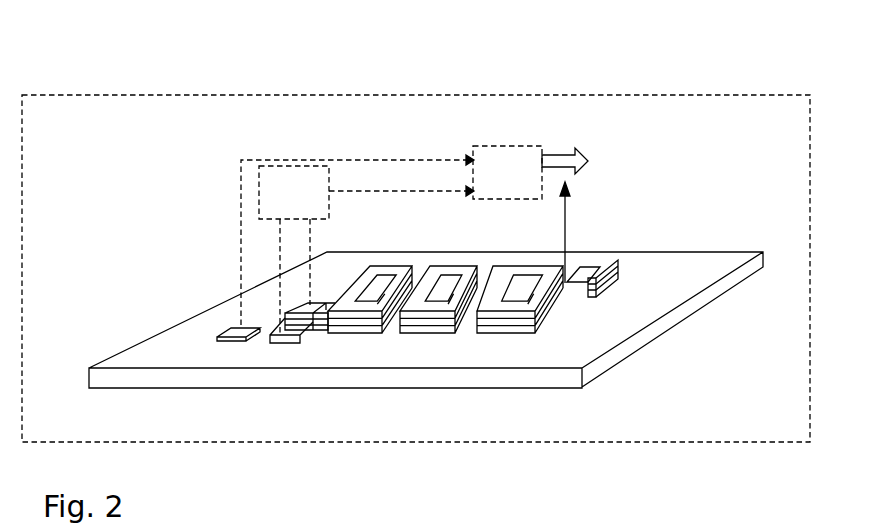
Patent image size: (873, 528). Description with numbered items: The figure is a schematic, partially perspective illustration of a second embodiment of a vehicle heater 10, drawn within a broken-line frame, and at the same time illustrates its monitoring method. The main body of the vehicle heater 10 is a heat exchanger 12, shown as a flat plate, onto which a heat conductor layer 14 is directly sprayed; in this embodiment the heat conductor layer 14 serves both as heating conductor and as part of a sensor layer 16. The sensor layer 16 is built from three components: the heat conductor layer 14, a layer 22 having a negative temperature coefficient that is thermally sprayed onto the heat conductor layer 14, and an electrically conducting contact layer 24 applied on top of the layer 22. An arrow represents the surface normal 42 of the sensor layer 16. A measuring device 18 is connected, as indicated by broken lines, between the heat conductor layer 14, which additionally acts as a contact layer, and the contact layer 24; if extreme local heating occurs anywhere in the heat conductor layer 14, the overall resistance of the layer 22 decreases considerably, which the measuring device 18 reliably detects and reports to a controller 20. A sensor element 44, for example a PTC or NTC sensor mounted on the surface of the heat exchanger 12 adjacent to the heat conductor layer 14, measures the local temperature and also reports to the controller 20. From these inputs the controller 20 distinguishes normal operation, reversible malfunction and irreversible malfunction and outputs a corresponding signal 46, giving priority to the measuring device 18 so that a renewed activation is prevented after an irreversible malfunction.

The vehicle heater 10 is at (113, 94).
The heat exchanger 12 is at (673, 318).
The heat conductor layer 14 is at (600, 292).
The sensor layer 16 is at (603, 282).
The measuring device 18 is at (357, 245).
The controller 20 is at (507, 172).
The layer having a negative temperature coefficient 22 is at (589, 298).
The contact layer 24 is at (650, 327).
The surface normal of the sensor layer 42 is at (568, 226).
The sensor element 44 is at (217, 333).
The signal 46 is at (558, 155).